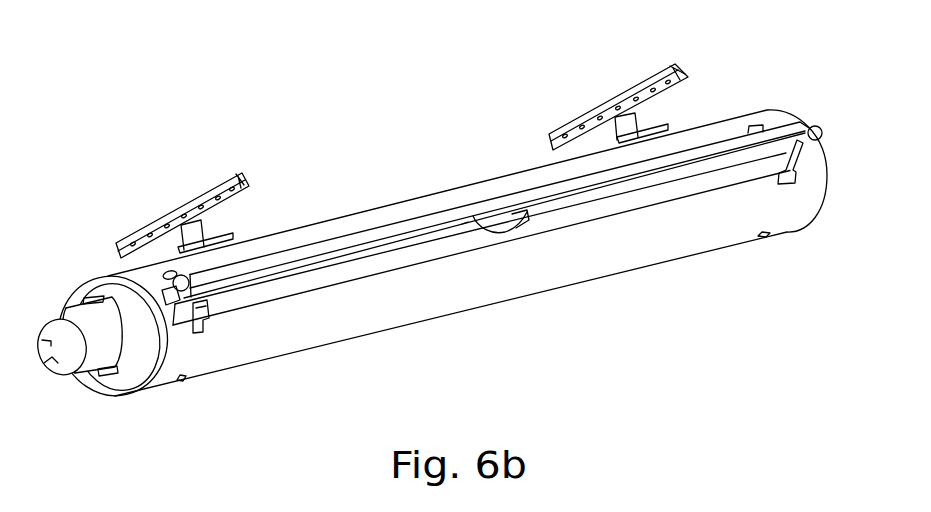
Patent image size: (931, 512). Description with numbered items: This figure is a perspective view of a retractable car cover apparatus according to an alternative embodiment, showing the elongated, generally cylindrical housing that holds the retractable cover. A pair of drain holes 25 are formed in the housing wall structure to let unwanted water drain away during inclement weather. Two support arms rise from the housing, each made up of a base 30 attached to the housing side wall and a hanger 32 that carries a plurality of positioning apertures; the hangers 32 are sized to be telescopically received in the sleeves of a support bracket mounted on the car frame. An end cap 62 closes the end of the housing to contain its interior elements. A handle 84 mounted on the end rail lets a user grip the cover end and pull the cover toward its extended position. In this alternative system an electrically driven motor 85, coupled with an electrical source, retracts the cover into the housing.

The drain holes 25 is at (182, 381).
The base 30 is at (197, 238).
The hanger 32 is at (193, 205).
The end cap 62 is at (108, 382).
The handle 84 is at (480, 230).
The electrically driven motor 85 is at (65, 373).